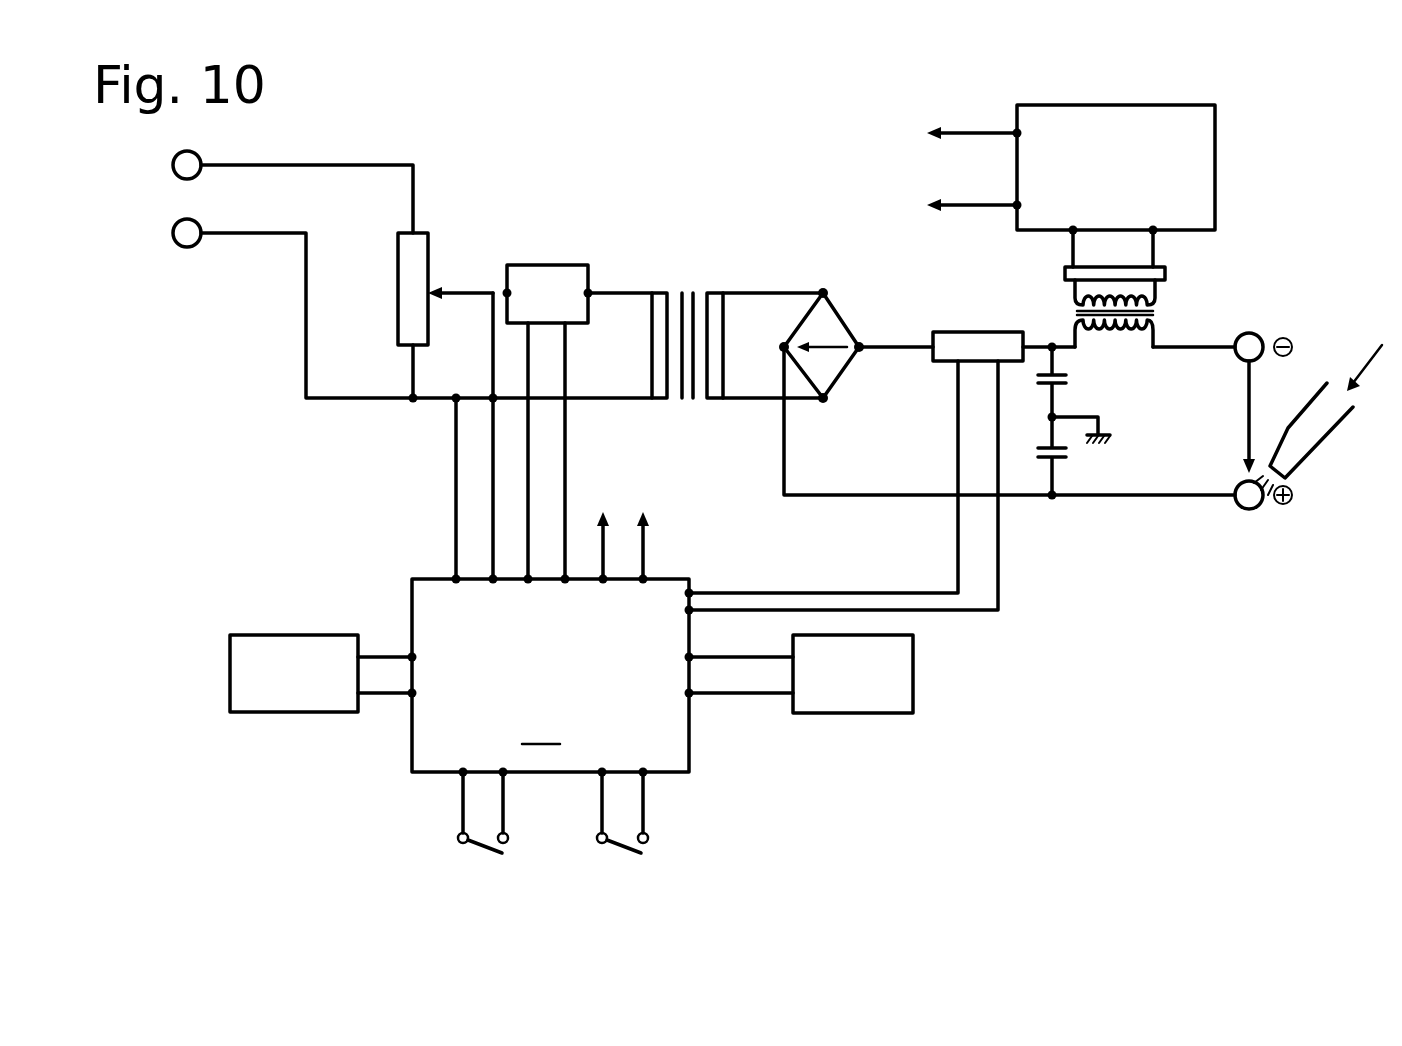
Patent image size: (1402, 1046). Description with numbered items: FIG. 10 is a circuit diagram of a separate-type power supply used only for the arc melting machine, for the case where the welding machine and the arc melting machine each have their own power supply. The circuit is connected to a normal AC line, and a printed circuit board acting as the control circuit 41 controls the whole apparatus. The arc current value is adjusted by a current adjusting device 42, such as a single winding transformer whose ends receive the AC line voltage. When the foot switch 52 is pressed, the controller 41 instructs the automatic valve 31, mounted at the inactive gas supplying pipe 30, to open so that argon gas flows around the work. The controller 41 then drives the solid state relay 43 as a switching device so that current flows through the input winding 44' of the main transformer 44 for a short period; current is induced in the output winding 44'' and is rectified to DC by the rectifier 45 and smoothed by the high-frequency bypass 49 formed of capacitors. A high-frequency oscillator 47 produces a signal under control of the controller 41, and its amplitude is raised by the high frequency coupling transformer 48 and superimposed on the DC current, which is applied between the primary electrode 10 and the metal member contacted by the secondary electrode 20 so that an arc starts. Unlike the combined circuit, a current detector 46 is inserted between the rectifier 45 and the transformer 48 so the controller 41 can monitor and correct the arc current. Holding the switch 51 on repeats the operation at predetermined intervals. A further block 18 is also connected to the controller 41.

The primary electrode 10 is at (1259, 337).
The sensor unit 18 is at (230, 670).
The secondary electrode 20 is at (1259, 508).
The inactive gas supplying pipe 30 is at (1290, 470).
The automatic valve 31 is at (913, 676).
The control circuit 41 is at (673, 579).
The current adjusting device 42 is at (428, 268).
The solid state relay 43 is at (553, 266).
The main transformer 44 is at (706, 270).
The input winding 44' is at (645, 307).
The output winding 44'' is at (748, 307).
The rectifier 45 is at (843, 320).
The current detector 46 is at (978, 332).
The high-frequency oscillator 47 is at (1215, 183).
The high frequency coupling transformer 48 is at (1166, 274).
The high-frequency bypass 49 is at (1105, 456).
The switch 51 is at (627, 851).
The foot switch 52 is at (487, 851).